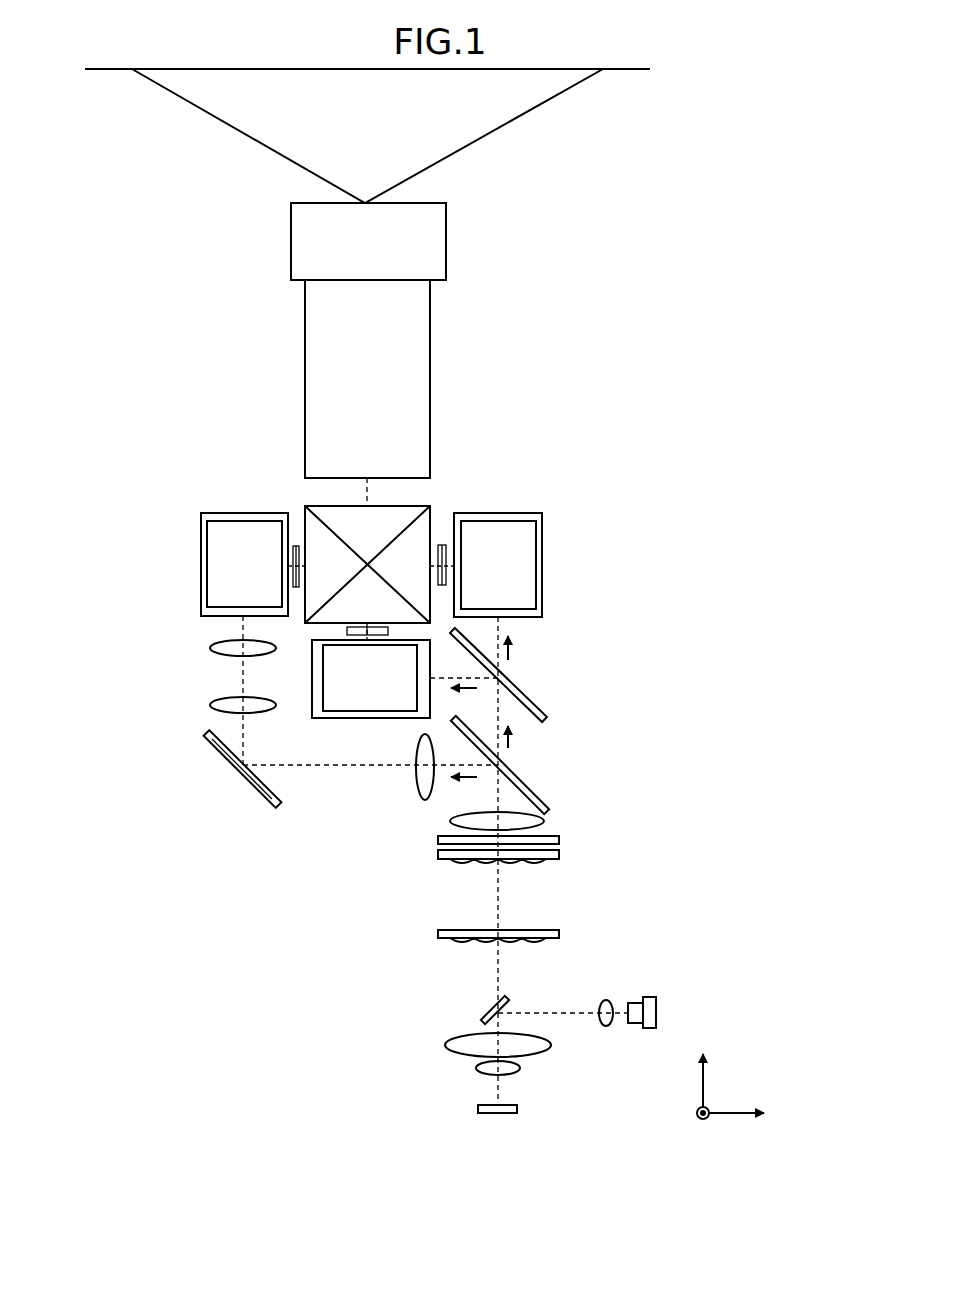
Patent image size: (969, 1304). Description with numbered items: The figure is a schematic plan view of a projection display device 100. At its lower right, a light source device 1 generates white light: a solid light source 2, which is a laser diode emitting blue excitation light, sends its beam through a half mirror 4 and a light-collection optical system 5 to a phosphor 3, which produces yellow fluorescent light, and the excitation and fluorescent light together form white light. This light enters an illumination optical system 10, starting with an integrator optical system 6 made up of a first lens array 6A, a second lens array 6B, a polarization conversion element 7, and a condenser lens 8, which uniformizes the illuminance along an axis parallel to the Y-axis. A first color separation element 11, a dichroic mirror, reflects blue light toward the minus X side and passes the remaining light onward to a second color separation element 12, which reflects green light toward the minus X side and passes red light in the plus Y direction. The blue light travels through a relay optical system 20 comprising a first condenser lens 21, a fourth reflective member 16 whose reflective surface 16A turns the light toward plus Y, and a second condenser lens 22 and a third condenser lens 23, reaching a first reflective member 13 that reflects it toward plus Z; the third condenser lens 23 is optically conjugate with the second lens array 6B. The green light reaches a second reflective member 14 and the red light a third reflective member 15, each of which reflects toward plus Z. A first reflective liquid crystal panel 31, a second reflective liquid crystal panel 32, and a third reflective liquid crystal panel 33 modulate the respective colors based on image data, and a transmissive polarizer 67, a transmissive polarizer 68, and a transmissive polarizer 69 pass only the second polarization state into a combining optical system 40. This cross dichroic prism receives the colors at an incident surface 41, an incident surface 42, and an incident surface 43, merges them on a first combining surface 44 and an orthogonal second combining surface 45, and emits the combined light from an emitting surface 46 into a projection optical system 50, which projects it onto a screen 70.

The screen 70 is at (625, 70).
The projection display device 100 is at (620, 260).
The projection optical system 50 is at (446, 240).
The combining optical system 40 is at (434, 519).
The incident surface 41 is at (302, 514).
The incident surface 42 is at (323, 626).
The incident surface 43 is at (432, 607).
The emitting surface 46 is at (396, 506).
The first combining surface 44 is at (396, 538).
The second combining surface 45 is at (344, 545).
The first reflective member 13 is at (216, 539).
The first reflective liquid crystal panel 31 is at (243, 530).
The second reflective member 14 is at (371, 699).
The second reflective liquid crystal panel 32 is at (340, 700).
The third reflective member 15 is at (525, 539).
The third reflective liquid crystal panel 33 is at (498, 532).
The transmissive polarizer 67 is at (300, 585).
The transmissive polarizer 68 is at (386, 627).
The transmissive polarizer 69 is at (438, 585).
The illumination optical system 10 is at (618, 712).
The first color separation element 11 is at (524, 782).
The second color separation element 12 is at (524, 692).
The relay optical system 20 is at (154, 678).
The first condenser lens 21 is at (416, 781).
The second condenser lens 22 is at (210, 705).
The third condenser lens 23 is at (210, 648).
The fourth reflective member 16 is at (252, 796).
The reflective surface 16A is at (270, 790).
The condenser lens 8 is at (438, 821).
The polarization conversion element 7 is at (438, 840).
The integrator optical system 6 is at (590, 884).
The first lens array 6A is at (438, 934).
The second lens array 6B is at (438, 855).
The half mirror 4 is at (486, 1012).
The light-collection optical system 5 is at (436, 1054).
The phosphor 3 is at (517, 1108).
The light source device 1 is at (646, 984).
The solid light source 2 is at (656, 1005).